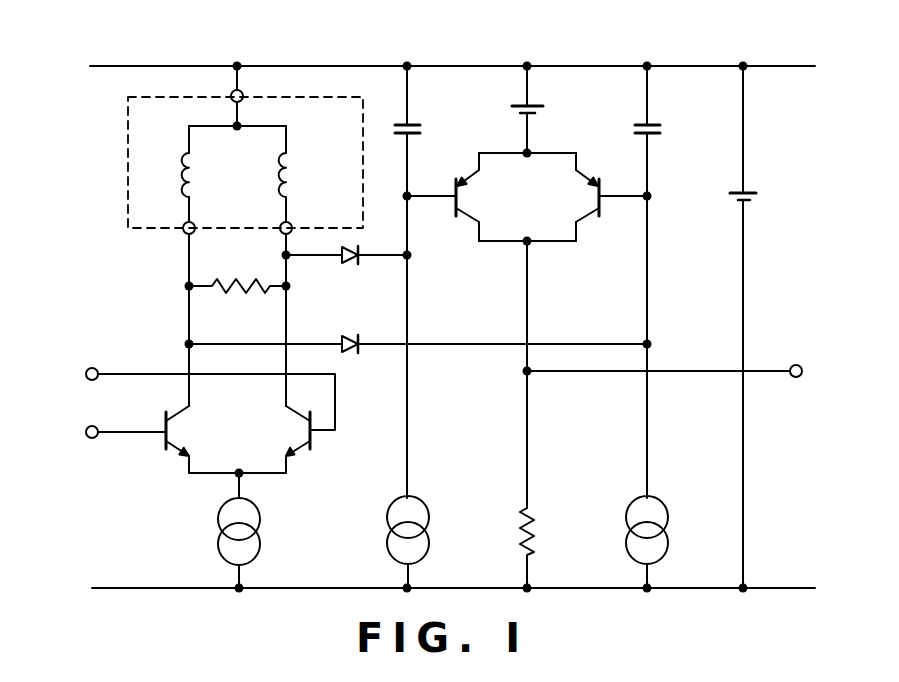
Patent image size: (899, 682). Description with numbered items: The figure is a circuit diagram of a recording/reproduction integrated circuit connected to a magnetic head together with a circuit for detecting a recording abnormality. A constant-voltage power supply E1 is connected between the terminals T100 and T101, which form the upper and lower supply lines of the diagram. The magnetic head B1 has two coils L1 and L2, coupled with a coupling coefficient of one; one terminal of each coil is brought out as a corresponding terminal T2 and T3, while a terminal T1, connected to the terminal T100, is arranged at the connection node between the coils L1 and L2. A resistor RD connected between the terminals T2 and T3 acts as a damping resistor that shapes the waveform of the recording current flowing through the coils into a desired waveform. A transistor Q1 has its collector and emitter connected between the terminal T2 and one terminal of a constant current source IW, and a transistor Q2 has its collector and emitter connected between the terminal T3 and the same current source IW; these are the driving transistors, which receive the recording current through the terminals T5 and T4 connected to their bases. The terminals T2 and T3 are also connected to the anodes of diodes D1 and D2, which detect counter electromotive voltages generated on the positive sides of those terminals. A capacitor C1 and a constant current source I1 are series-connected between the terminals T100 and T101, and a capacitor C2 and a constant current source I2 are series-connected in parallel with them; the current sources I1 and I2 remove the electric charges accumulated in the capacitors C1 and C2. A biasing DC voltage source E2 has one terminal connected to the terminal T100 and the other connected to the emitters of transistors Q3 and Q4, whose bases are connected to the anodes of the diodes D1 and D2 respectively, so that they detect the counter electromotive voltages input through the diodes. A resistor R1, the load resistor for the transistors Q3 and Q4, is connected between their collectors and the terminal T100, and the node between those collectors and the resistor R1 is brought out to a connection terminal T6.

The terminal T1 is at (241, 90).
The terminal T2 is at (186, 234).
The terminal T3 is at (282, 234).
The terminal T4 is at (92, 368).
The terminal T5 is at (92, 438).
The connection terminal T6 is at (796, 365).
The terminal T100 is at (763, 66).
The terminal T101 is at (764, 588).
The magnetic head B1 is at (128, 166).
The coil L1 is at (190, 172).
The coil L2 is at (288, 172).
The resistor RD is at (233, 289).
The diode D1 is at (348, 264).
The diode D2 is at (348, 353).
The transistor Q1 is at (185, 439).
The transistor Q2 is at (291, 431).
The transistor Q3 is at (476, 201).
The transistor Q4 is at (580, 190).
The constant current source IW is at (261, 529).
The constant current source I1 is at (430, 533).
The constant current source I2 is at (669, 533).
The capacitor C1 is at (431, 101).
The capacitor C2 is at (671, 101).
The constant-voltage power supply E1 is at (736, 203).
The biasing DC voltage source E2 is at (542, 110).
The resistor R1 is at (535, 531).